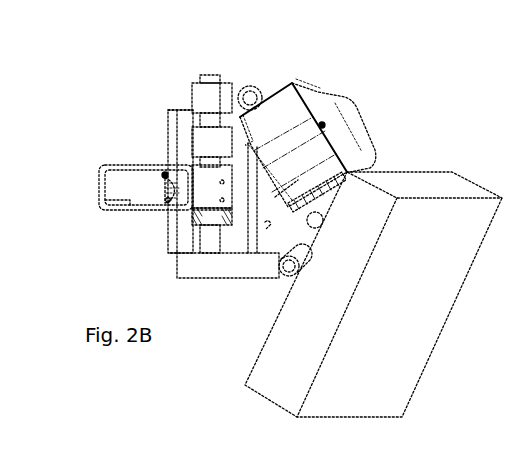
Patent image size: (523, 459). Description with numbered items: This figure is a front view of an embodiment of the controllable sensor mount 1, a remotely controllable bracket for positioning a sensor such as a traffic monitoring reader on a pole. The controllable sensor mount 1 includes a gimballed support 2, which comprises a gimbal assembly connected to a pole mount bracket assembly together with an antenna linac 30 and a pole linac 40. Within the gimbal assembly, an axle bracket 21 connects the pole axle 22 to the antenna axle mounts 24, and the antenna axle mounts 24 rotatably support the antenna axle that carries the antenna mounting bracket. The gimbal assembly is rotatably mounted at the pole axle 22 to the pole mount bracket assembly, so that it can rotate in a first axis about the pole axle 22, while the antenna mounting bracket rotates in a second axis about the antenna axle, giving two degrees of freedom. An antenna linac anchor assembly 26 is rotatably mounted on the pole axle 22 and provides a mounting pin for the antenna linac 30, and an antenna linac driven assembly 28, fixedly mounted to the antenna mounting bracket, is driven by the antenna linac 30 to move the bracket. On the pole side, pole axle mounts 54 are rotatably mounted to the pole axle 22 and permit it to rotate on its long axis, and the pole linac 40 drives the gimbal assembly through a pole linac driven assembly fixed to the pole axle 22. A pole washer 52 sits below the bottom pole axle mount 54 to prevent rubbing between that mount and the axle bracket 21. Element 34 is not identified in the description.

The controllable sensor mount 1 is at (310, 43).
The gimballed support 2 is at (157, 80).
The axle bracket 21 is at (197, 270).
The pole axle 22 is at (212, 75).
The antenna axle mounts 24 is at (282, 280).
The antenna linac anchor assembly 26 is at (237, 86).
The antenna linac driven assembly 28 is at (250, 80).
The antenna linac 30 is at (360, 112).
The bracket 34 is at (197, 240).
The pole linac 40 is at (95, 178).
The pole washer 52 is at (178, 218).
The pole axle mounts 54 is at (193, 138).